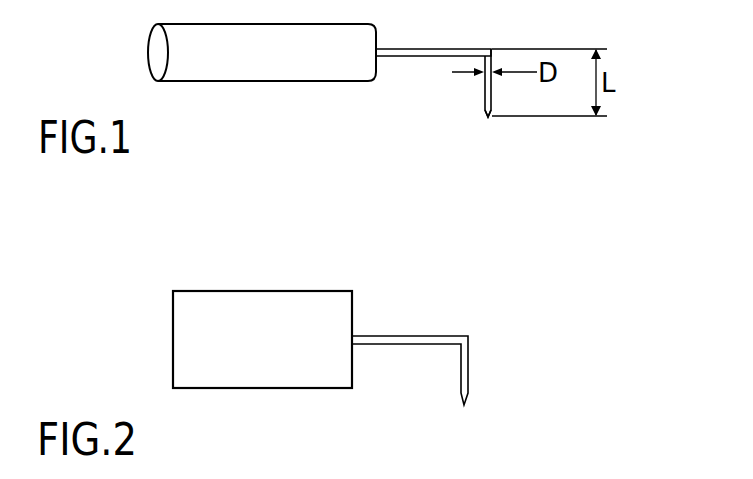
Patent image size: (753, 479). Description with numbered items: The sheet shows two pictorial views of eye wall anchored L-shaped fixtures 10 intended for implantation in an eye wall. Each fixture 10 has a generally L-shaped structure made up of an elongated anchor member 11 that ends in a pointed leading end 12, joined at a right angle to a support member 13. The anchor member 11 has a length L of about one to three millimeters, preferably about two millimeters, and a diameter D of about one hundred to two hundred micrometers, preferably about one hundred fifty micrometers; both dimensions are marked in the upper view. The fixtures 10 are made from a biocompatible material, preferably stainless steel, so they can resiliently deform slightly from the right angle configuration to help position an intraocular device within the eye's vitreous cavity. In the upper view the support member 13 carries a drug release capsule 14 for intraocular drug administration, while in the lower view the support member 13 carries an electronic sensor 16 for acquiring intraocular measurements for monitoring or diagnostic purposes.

In FIG. 2, the eye wall anchored L-shaped fixture 10 is at (493, 297).
In FIG. 1, the anchor member 11 is at (483, 91).
In FIG. 1, the pointed leading end 12 is at (488, 118).
In FIG. 1, the support member 13 is at (420, 49).
In FIG. 1, the drug release capsule 14 is at (193, 65).
In FIG. 2, the electronic sensor 16 is at (255, 378).